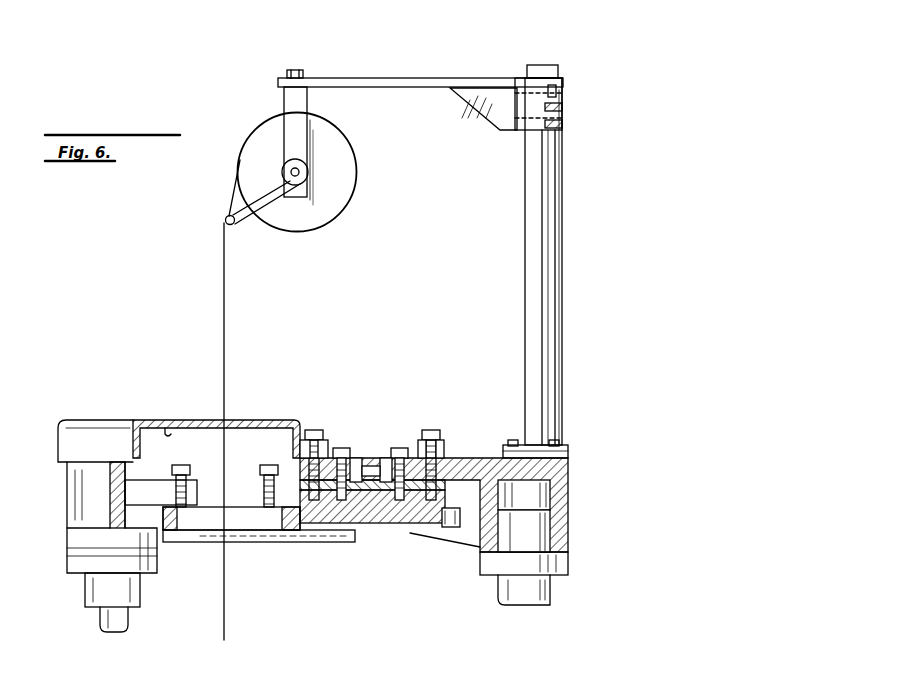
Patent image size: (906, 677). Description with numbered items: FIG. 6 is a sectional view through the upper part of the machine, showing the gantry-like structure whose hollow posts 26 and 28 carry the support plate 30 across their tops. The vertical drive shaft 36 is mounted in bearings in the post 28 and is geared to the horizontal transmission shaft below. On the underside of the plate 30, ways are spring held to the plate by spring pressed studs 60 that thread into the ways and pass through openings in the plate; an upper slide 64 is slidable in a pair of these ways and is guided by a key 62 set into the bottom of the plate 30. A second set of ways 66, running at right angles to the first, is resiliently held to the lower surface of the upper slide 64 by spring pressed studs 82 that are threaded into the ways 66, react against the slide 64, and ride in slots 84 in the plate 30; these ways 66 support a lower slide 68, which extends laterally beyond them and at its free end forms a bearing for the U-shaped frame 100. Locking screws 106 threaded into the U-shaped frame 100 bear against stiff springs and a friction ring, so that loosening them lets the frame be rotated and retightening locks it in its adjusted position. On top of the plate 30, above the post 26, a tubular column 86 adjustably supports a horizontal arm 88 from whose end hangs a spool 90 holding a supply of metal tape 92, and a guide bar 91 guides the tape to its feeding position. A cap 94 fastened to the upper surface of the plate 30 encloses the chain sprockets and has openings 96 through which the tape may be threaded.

The hollow post 26 is at (554, 587).
The hollow post 28 is at (142, 592).
The support plate 30 is at (481, 457).
The vertical drive shaft 36 is at (130, 622).
The spring pressed studs 60 is at (310, 428).
The key 62 is at (368, 465).
The upper slide 64 is at (367, 526).
The ways 66 is at (430, 532).
The lower slide 68 is at (453, 544).
The spring pressed studs 82 is at (341, 446).
The slots 84 is at (354, 457).
The tubular column 86 is at (565, 287).
The horizontal arm 88 is at (350, 78).
The spool 90 is at (332, 205).
The guide bar 91 is at (233, 224).
The metal tape 92 is at (230, 268).
The cap 94 is at (146, 420).
The openings 96 is at (210, 419).
The U-shaped frame 100 is at (307, 548).
The locking screws 106 is at (182, 467).